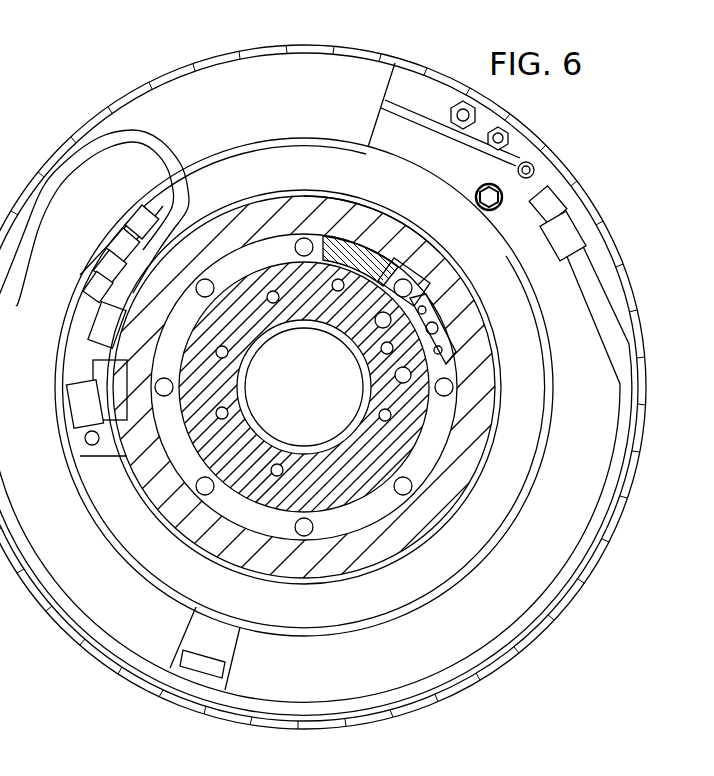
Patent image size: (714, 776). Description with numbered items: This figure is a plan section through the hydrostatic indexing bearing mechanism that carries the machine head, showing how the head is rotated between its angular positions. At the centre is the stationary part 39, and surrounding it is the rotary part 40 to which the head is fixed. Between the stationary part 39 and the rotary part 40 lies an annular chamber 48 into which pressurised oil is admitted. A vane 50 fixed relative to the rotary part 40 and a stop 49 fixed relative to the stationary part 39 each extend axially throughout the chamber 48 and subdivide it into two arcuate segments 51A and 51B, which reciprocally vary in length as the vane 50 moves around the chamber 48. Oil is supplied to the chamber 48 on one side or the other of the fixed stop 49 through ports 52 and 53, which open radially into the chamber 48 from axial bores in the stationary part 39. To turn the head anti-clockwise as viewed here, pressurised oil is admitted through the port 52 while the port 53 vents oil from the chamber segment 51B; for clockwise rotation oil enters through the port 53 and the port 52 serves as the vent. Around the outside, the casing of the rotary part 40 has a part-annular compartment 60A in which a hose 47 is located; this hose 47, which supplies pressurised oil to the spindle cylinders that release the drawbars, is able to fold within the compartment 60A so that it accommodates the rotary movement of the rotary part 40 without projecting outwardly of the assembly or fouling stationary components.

The stationary part 39 is at (224, 393).
The rotary part 40 is at (462, 443).
The hose 47 is at (617, 450).
The annular chamber 48 is at (190, 462).
The stop 49 is at (450, 358).
The vane 50 is at (415, 240).
The arcuate chamber segment 51A is at (446, 254).
The arcuate chamber segment 51B is at (328, 522).
The port 52 is at (450, 293).
The port 53 is at (411, 374).
The part-annular compartment 60A is at (573, 488).